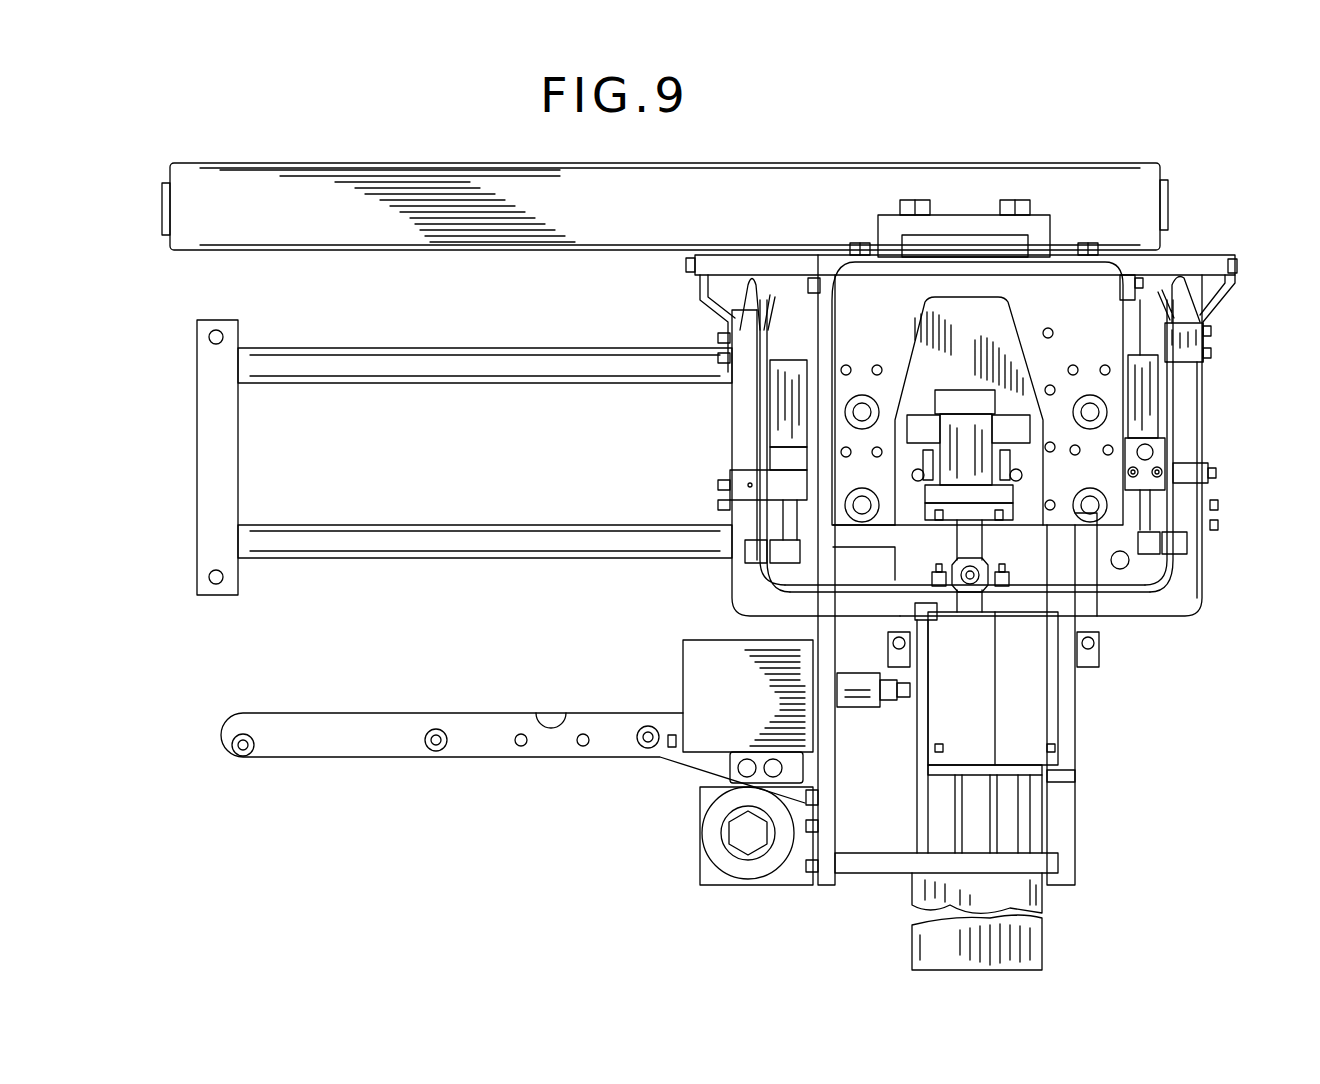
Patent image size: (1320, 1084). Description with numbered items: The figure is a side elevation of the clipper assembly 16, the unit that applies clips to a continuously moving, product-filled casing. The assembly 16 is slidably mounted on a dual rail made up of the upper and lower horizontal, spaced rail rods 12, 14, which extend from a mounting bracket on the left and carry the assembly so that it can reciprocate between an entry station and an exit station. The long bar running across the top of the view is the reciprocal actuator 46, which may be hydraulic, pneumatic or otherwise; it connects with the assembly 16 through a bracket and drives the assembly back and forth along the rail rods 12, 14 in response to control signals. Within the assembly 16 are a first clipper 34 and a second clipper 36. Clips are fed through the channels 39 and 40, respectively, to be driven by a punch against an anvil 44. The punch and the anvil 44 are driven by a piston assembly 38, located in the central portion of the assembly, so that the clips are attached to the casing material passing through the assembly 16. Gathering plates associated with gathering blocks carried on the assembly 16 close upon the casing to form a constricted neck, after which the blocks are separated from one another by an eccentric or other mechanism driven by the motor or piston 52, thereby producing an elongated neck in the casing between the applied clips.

The rail rod 12 is at (428, 350).
The rail rod 14 is at (420, 530).
The clipper assembly 16 is at (1210, 429).
The first clipper 34 is at (1190, 575).
The second clipper 36 is at (750, 590).
The piston assembly 38 is at (968, 428).
The channel 39 is at (1125, 582).
The channel 40 is at (770, 598).
The anvil 44 is at (977, 568).
The reciprocal actuator 46 is at (733, 178).
The motor or piston 52 is at (860, 685).